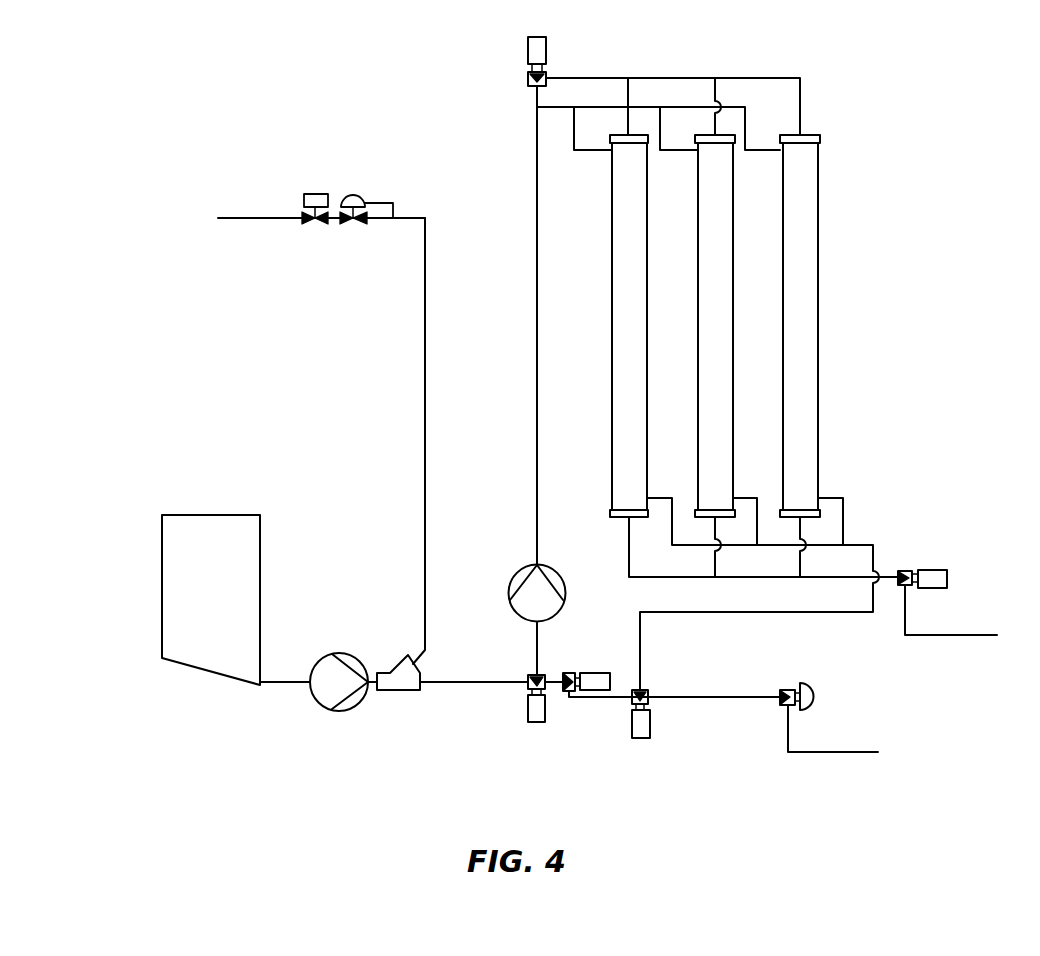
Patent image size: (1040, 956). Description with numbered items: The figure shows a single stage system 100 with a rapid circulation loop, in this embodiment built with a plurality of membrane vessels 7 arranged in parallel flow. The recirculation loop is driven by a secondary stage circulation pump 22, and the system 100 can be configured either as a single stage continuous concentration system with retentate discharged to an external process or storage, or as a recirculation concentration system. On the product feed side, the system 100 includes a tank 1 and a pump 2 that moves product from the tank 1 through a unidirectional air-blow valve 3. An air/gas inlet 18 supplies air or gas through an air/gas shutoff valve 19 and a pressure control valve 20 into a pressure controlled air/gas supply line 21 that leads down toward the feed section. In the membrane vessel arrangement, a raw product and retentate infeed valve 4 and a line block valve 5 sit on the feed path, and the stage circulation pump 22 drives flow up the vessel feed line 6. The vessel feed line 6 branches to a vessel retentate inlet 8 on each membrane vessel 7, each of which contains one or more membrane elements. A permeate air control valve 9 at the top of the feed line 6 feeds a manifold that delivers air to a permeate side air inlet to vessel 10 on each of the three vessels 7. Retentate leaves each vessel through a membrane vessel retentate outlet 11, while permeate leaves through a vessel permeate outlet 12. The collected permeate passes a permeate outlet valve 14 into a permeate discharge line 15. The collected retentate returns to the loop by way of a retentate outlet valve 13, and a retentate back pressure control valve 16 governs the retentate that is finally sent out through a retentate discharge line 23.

The single stage system 100 is at (930, 150).
The tank 1 is at (262, 556).
The pump 2 is at (340, 654).
The unidirectional air-blow valve 3 is at (420, 668).
The raw product and retentate infeed valve 4 is at (536, 722).
The line block valve 5 is at (568, 672).
The vessel feed line 6 is at (537, 425).
The membrane vessel 7 is at (648, 276).
The vessel retentate inlet 8 is at (578, 148).
The permeate air control valve 9 is at (528, 50).
The permeate side air inlet to vessel 10 is at (632, 92).
The membrane vessel retentate outlet 11 is at (658, 494).
The vessel permeate outlet 12 is at (628, 547).
The retentate outlet valve 13 is at (641, 738).
The permeate outlet valve 14 is at (930, 568).
The permeate discharge line 15 is at (967, 632).
The retentate back pressure control valve 16 is at (790, 685).
The air/gas inlet 18 is at (262, 215).
The air/gas shutoff valve 19 is at (315, 192).
The pressure control valve 20 is at (355, 195).
The pressure controlled air/gas supply line 21 is at (430, 346).
The stage circulation pump 22 is at (522, 572).
The retentate discharge line 23 is at (842, 752).